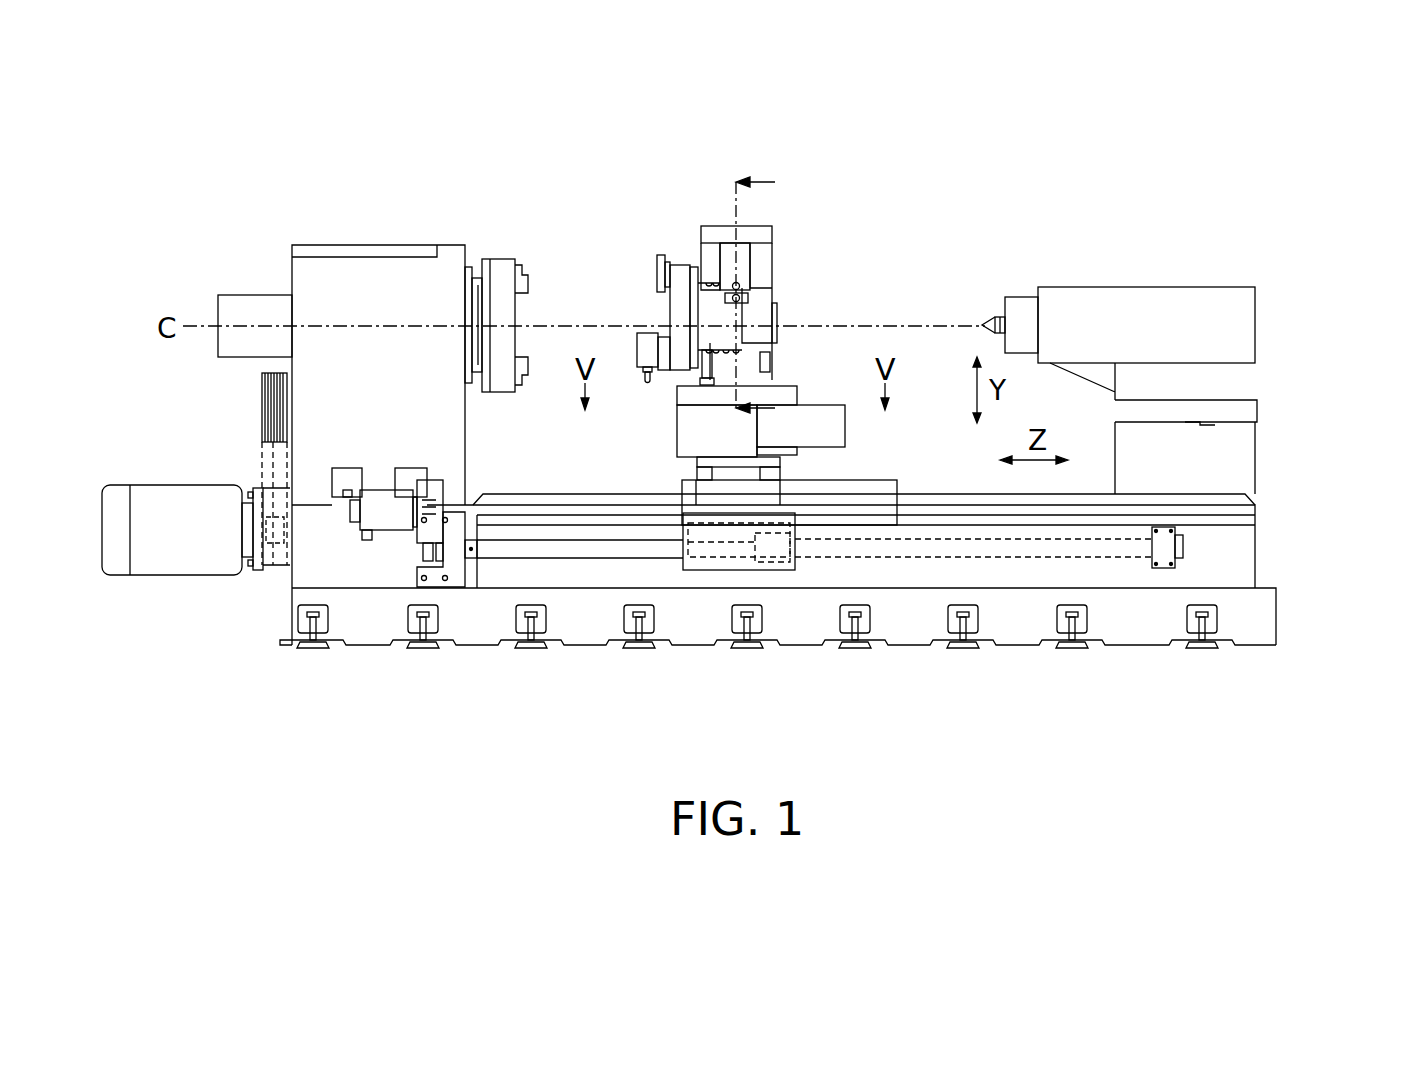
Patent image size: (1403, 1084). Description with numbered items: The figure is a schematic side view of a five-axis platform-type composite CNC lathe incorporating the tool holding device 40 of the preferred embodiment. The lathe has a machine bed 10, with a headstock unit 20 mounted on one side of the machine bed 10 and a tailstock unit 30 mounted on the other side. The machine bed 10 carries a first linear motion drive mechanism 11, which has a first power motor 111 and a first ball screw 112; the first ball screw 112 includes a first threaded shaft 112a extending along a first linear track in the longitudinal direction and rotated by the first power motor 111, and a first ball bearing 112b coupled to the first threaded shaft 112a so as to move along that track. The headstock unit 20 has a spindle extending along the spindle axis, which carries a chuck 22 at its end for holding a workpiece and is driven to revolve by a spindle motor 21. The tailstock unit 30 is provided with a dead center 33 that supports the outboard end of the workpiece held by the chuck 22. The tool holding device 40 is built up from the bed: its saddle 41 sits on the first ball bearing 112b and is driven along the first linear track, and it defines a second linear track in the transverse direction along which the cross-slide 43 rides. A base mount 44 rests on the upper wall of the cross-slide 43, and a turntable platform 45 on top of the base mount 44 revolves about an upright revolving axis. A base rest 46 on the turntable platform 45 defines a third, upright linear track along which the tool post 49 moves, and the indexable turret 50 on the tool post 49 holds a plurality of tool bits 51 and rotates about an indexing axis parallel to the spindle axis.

The machine bed 10 is at (1257, 560).
The first linear motion drive mechanism 11 is at (405, 530).
The first power motor 111 is at (383, 508).
The first ball screw 112 is at (812, 548).
The first threaded shaft 112a is at (908, 552).
The first ball bearing 112b is at (776, 573).
The headstock unit 20 is at (360, 275).
The spindle motor 21 is at (228, 558).
The chuck 22 is at (500, 258).
The tailstock unit 30 is at (1122, 287).
The dead center 33 is at (985, 323).
The tool holding device 40 is at (780, 240).
The saddle 41 is at (820, 490).
The cross-slide 43 is at (700, 462).
The base mount 44 is at (690, 435).
The turntable platform 45 is at (683, 397).
The base rest 46 is at (772, 272).
The tool post 49 is at (743, 255).
The indexable turret 50 is at (688, 262).
The tool bits 51 is at (658, 256).